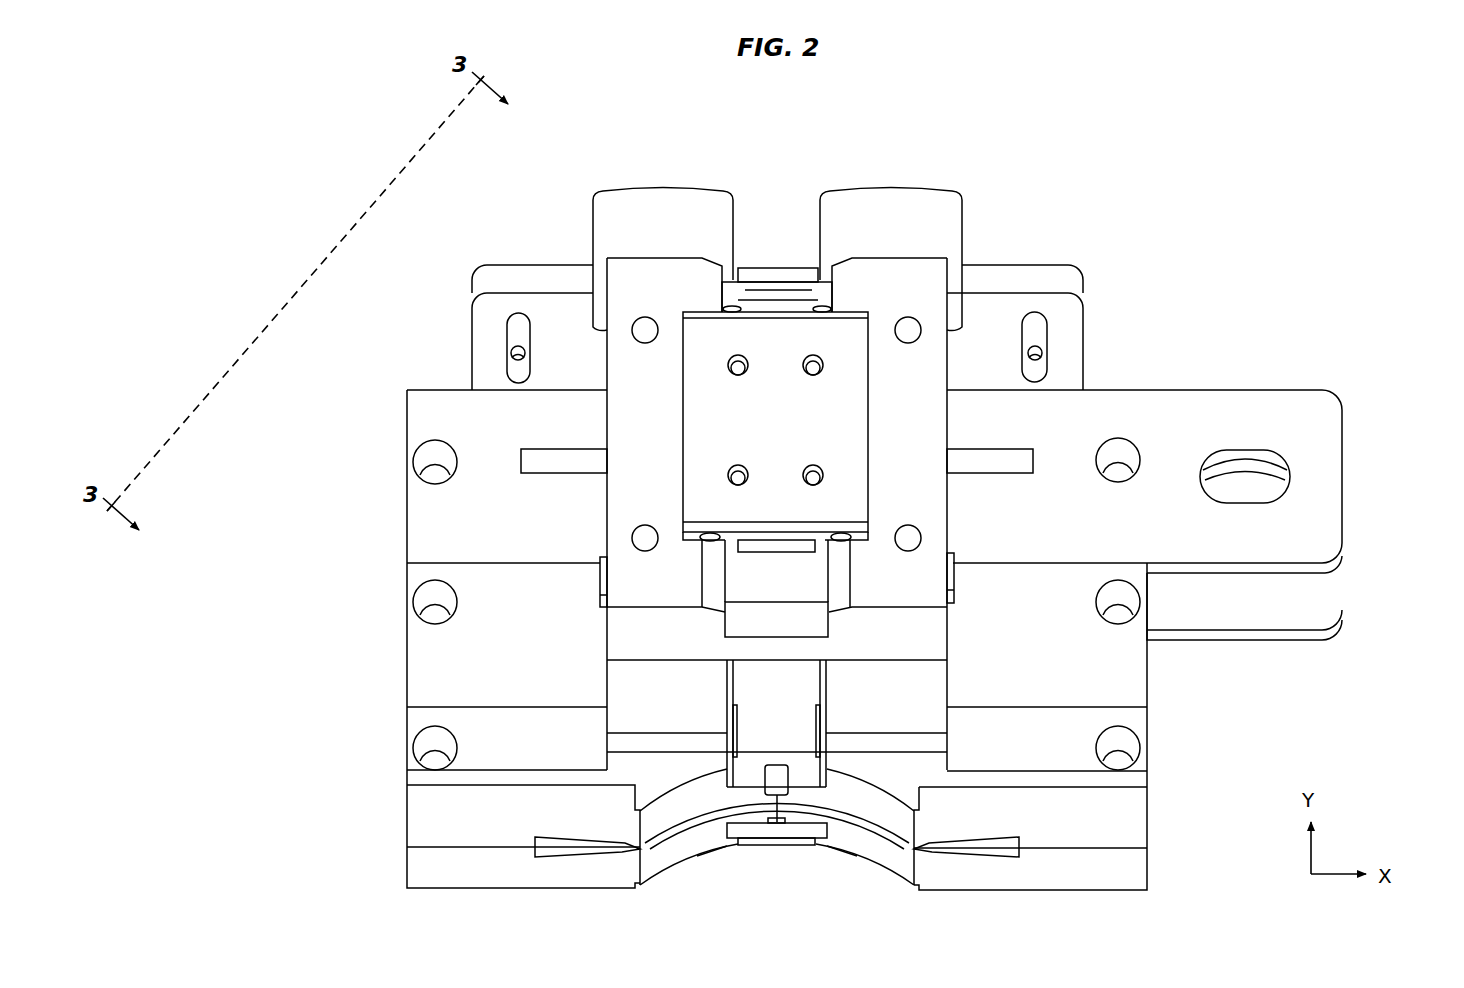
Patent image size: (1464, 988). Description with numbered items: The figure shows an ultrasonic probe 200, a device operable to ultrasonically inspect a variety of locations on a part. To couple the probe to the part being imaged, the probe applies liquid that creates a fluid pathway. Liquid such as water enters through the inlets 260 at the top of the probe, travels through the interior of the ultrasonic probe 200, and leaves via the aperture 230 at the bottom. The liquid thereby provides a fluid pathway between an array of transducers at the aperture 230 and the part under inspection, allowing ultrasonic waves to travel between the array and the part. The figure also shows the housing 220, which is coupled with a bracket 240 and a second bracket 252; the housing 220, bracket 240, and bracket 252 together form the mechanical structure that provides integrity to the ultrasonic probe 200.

The ultrasonic probe 200 is at (1352, 289).
The housing 220 is at (1090, 523).
The aperture 230 is at (790, 910).
The bracket 240 is at (1083, 340).
The bracket 252 is at (1040, 265).
The inlets 260 is at (720, 215).